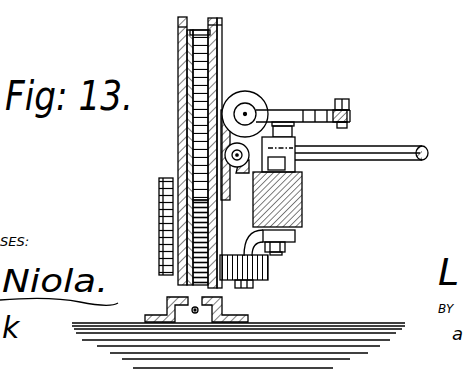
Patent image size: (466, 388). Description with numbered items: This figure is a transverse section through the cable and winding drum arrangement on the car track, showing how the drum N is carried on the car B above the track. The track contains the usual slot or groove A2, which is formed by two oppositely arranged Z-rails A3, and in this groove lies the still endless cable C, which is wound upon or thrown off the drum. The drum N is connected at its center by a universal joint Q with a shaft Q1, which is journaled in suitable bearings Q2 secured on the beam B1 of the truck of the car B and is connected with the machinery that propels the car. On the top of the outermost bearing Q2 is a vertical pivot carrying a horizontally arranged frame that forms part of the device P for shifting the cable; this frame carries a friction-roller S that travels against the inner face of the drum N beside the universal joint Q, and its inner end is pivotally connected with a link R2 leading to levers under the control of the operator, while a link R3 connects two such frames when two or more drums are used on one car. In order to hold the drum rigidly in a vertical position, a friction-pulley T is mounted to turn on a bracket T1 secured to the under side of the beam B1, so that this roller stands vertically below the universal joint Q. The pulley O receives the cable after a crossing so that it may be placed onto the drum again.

The drum N is at (176, 47).
The pulley O is at (158, 200).
The device P is at (261, 71).
The friction-roller S is at (245, 91).
The universal joint Q is at (282, 122).
The link R3 is at (318, 110).
The link R2 is at (346, 106).
The car B is at (409, 96).
The bearing Q2 is at (296, 140).
The shaft Q1 is at (397, 161).
The beam B1 is at (303, 200).
The friction-pulley T is at (229, 255).
The bracket T1 is at (297, 237).
The Z-rail A3 is at (275, 308).
The slot or groove A2 is at (206, 297).
The cable C is at (194, 313).